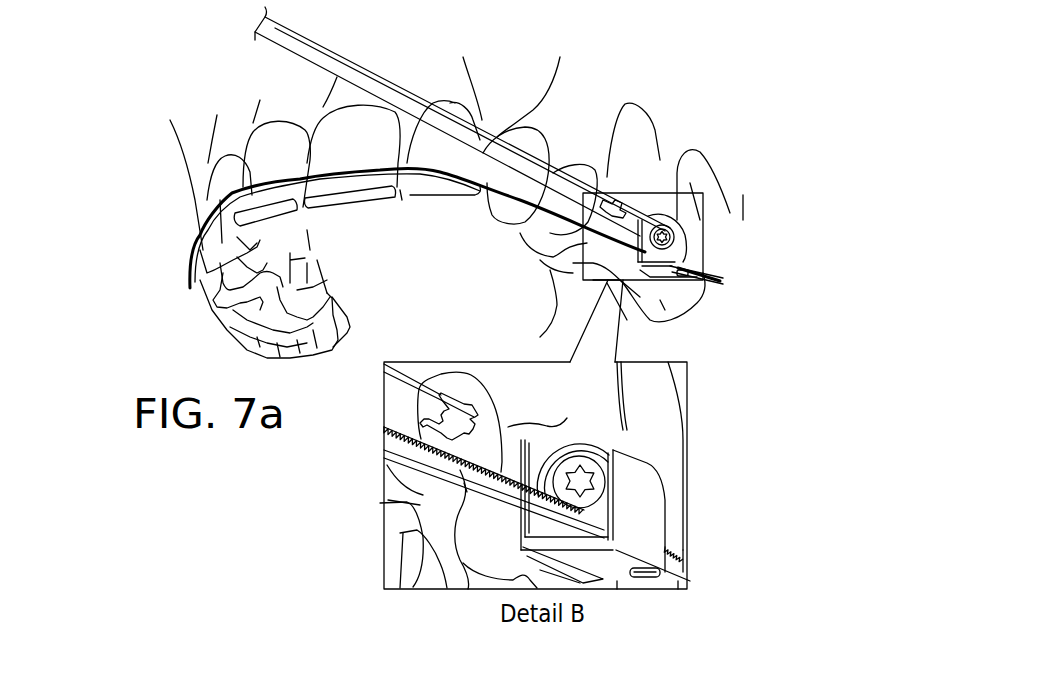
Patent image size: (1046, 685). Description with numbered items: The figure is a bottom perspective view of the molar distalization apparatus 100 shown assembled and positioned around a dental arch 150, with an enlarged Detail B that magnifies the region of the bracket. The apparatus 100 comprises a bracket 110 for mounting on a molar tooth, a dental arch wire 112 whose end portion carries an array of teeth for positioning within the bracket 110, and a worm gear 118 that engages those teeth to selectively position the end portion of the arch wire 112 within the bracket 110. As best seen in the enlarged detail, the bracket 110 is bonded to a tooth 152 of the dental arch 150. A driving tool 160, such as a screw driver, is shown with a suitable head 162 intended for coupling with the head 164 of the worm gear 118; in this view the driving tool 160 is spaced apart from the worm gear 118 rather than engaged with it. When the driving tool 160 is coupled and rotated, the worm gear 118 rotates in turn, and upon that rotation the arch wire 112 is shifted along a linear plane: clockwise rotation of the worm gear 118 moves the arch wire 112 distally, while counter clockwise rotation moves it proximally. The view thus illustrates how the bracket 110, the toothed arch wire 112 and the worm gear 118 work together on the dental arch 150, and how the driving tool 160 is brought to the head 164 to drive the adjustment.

The apparatus 100 is at (153, 270).
The dental arch 150 is at (554, 273).
The driving tool 160 is at (397, 396).
The head 162 is at (494, 398).
The tooth 152 is at (481, 434).
The bracket 110 is at (647, 463).
The head 164 is at (597, 471).
The worm gear 118 is at (605, 491).
The dental arch wire 112 is at (468, 588).